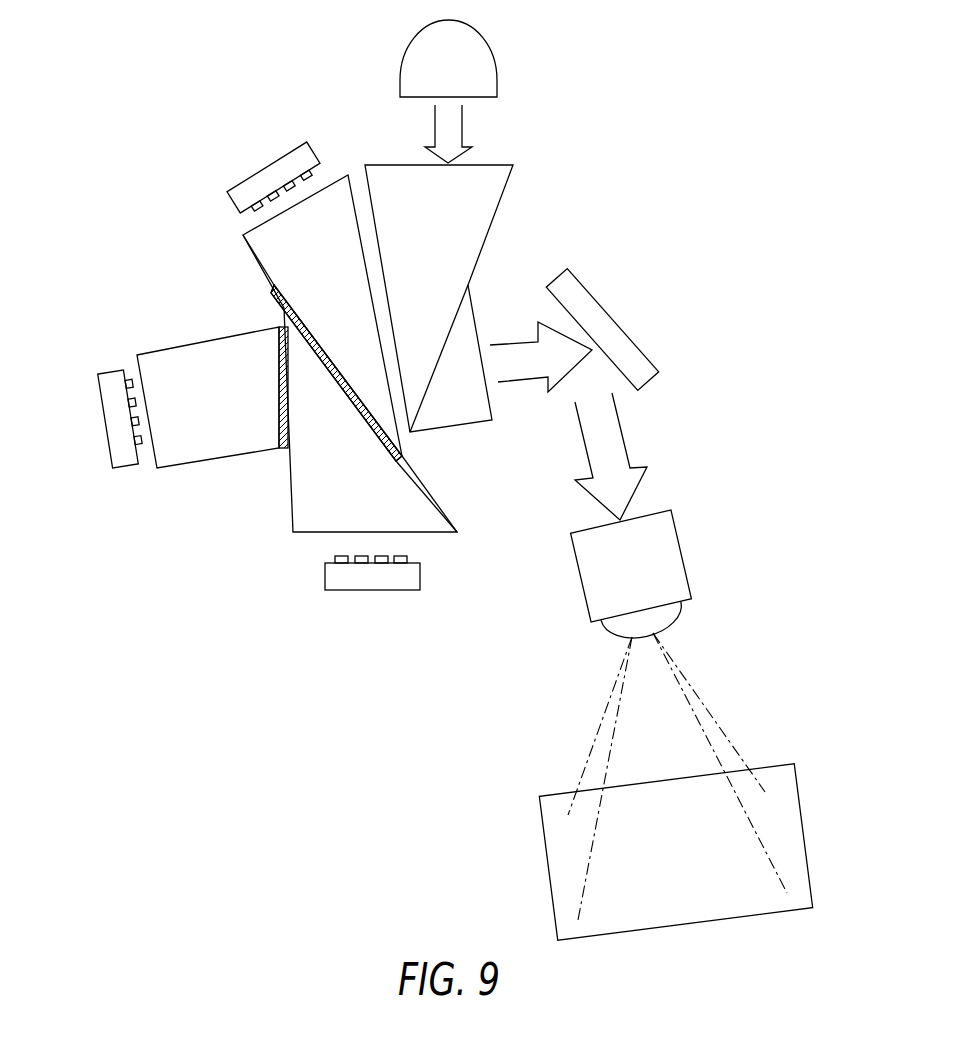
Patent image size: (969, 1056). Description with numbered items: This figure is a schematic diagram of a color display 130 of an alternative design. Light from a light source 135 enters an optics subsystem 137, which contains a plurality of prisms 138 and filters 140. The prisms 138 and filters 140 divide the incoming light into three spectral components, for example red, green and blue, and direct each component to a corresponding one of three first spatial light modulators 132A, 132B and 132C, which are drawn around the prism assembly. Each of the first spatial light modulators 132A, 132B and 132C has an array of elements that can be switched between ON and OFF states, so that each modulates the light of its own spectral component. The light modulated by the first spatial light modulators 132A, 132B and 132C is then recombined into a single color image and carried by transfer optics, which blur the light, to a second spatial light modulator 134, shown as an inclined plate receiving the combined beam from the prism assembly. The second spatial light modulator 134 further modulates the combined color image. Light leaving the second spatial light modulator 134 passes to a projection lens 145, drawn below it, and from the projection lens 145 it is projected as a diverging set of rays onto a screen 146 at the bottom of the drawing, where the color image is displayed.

The color display 130 is at (198, 102).
The first spatial light modulator 132A is at (267, 167).
The first spatial light modulator 132B is at (110, 425).
The first spatial light modulator 132C is at (373, 580).
The second spatial light modulator 134 is at (587, 307).
The light source 135 is at (468, 58).
The optics subsystem 137 is at (496, 287).
The prism 138 is at (472, 227).
The filter 140 is at (405, 452).
The projection lens 145 is at (663, 552).
The screen 146 is at (783, 820).